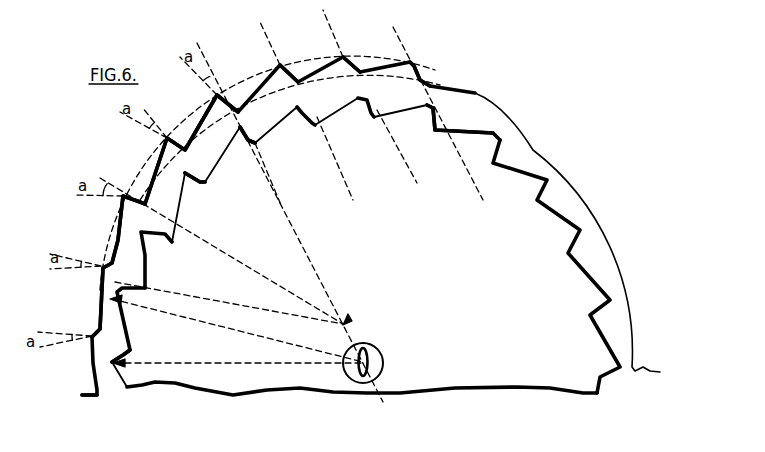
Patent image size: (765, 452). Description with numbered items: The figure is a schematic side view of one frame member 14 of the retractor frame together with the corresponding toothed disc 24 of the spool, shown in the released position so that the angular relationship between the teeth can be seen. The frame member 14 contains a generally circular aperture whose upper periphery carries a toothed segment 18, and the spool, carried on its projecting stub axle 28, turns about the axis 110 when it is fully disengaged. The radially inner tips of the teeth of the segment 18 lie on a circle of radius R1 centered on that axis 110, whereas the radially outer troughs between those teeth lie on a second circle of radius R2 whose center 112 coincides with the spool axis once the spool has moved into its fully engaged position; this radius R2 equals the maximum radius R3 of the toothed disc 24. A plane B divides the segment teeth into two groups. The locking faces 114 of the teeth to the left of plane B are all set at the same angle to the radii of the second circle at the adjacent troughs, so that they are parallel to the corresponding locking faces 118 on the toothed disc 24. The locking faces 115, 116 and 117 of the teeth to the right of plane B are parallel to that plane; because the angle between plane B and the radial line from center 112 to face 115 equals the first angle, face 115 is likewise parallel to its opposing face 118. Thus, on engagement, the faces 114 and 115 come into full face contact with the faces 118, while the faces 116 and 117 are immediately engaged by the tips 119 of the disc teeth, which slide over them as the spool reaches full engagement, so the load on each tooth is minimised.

The frame member 14 is at (72, 388).
The toothed segment 18 is at (414, 58).
The toothed disc 24 is at (287, 391).
The stub axle 28 is at (373, 353).
The axis of the spool 110 is at (372, 367).
The center 112 is at (356, 318).
The locking faces 114 is at (219, 94).
The locking face 115 is at (294, 77).
The locking face 116 is at (355, 64).
The locking face 117 is at (421, 76).
The locking faces 118 is at (247, 140).
The tips 119 is at (380, 92).
The plane B- B is at (293, 223).
The radius R1 is at (236, 328).
The radius R2 is at (229, 303).
The radius R3 is at (238, 364).